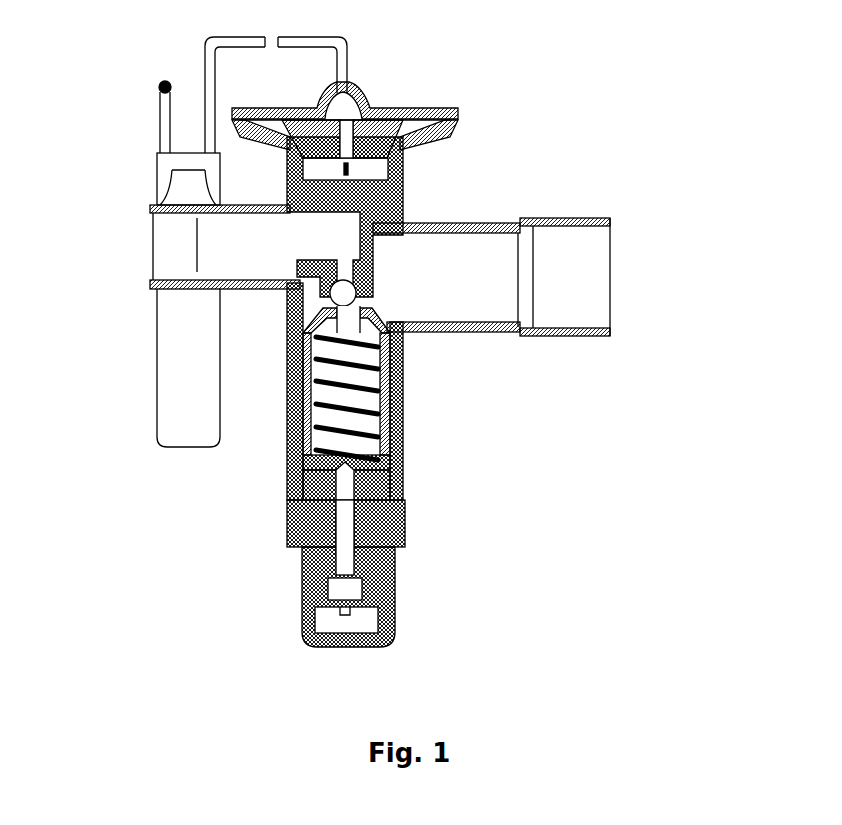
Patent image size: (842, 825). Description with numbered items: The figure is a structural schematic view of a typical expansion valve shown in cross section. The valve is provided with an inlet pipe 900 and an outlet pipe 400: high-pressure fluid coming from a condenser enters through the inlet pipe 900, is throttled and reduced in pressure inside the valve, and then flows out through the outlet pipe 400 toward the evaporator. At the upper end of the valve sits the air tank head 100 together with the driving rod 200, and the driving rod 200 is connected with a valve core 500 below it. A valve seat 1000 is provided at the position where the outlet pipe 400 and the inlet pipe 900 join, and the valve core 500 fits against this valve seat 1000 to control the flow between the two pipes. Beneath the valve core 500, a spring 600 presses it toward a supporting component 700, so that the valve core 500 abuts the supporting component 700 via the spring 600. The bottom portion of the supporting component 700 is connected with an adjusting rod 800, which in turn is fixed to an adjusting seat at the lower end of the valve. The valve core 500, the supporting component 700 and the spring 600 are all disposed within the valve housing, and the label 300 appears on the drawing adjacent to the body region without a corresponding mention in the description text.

The air tank head 100 is at (482, 86).
The driving rod 200 is at (507, 130).
The valve body 300 is at (509, 215).
The outlet pipe 400 is at (552, 266).
The valve core 500 is at (505, 391).
The spring 600 is at (512, 404).
The supporting component 700 is at (512, 505).
The adjusting rod 800 is at (503, 573).
The inlet pipe 900 is at (179, 264).
The valve seat 1000 is at (204, 321).